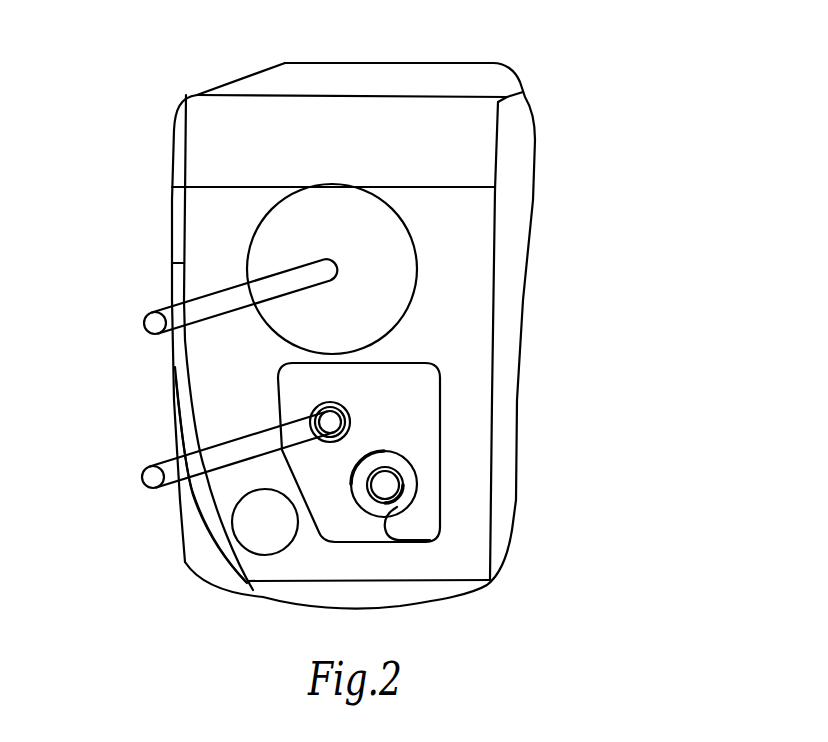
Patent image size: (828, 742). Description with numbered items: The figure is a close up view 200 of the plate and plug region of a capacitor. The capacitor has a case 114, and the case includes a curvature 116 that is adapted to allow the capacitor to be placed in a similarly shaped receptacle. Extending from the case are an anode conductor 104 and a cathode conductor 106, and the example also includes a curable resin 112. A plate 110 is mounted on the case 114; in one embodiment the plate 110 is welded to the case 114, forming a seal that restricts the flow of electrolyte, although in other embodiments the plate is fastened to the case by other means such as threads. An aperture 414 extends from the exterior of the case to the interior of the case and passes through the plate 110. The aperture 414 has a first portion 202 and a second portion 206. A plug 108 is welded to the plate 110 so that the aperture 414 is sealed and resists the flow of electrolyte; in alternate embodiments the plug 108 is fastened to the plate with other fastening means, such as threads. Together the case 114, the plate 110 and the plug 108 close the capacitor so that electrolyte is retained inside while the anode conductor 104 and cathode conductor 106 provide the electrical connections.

The close up view 200 is at (575, 88).
The case 114 is at (424, 63).
The curvature 116 is at (207, 550).
The curable resin 112 is at (270, 232).
The anode conductor 104 is at (162, 308).
The cathode conductor 106 is at (160, 467).
The plug 108 is at (238, 522).
The plate 110 is at (413, 387).
The first portion 202 is at (377, 524).
The second portion 206 is at (298, 511).
The aperture 414 is at (405, 462).